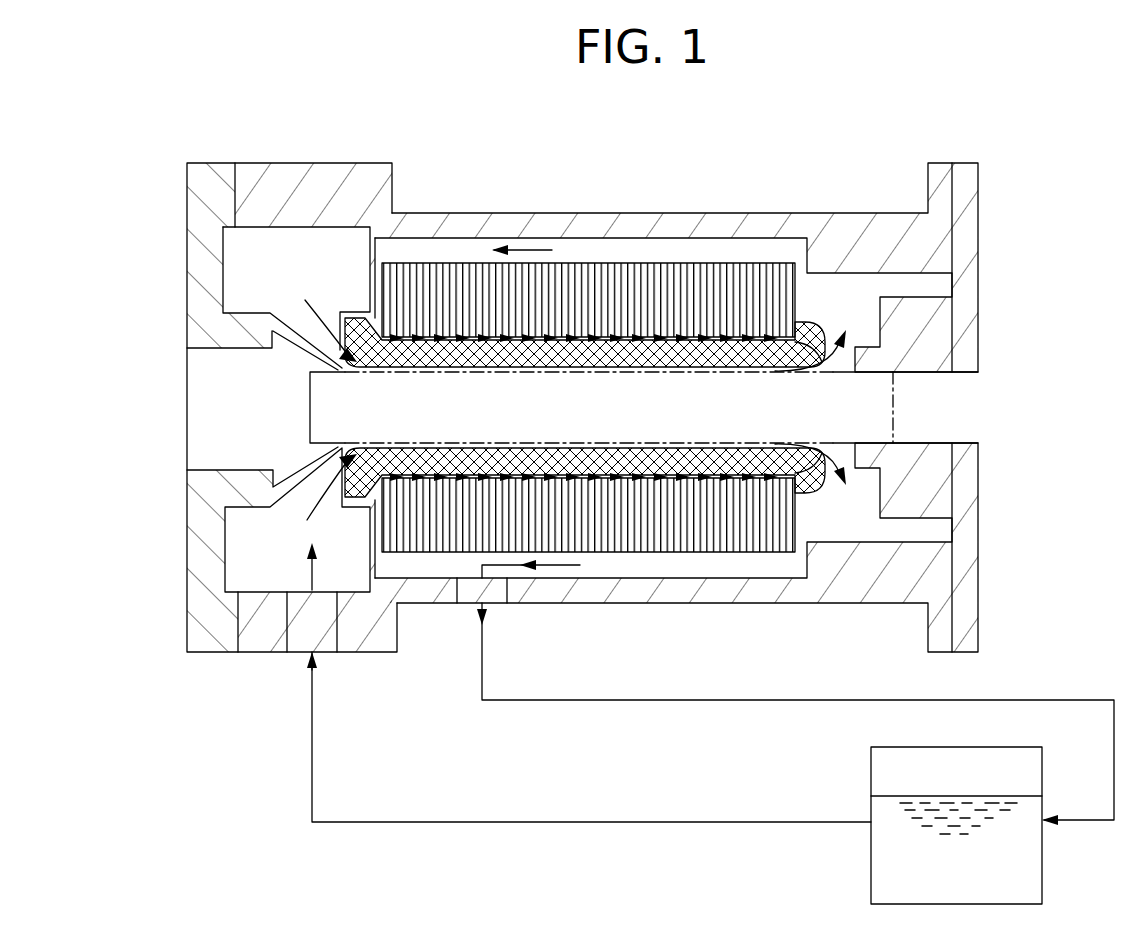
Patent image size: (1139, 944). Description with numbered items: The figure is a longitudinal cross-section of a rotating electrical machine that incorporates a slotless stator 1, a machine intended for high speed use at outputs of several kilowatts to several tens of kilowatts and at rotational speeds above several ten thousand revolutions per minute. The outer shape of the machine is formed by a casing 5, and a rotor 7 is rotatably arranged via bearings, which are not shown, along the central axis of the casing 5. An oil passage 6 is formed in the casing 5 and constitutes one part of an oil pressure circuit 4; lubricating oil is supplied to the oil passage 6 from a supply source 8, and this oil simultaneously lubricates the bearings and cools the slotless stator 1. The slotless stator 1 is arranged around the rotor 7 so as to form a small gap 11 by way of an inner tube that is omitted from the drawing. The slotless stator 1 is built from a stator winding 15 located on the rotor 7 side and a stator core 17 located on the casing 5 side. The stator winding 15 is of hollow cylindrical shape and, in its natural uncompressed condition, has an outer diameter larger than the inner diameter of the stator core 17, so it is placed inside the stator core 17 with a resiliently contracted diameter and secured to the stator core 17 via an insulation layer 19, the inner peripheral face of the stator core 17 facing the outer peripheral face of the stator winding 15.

The slotless stator 1 is at (602, 338).
The oil pressure circuit 4 is at (1057, 699).
The casing 5 is at (363, 178).
The oil passage 6 is at (450, 233).
The rotor 7 is at (882, 418).
The supply source 8 is at (1034, 870).
The gap 11 is at (748, 445).
The stator winding 15 is at (815, 320).
The stator core 17 is at (588, 361).
The insulation layer 19 is at (766, 480).